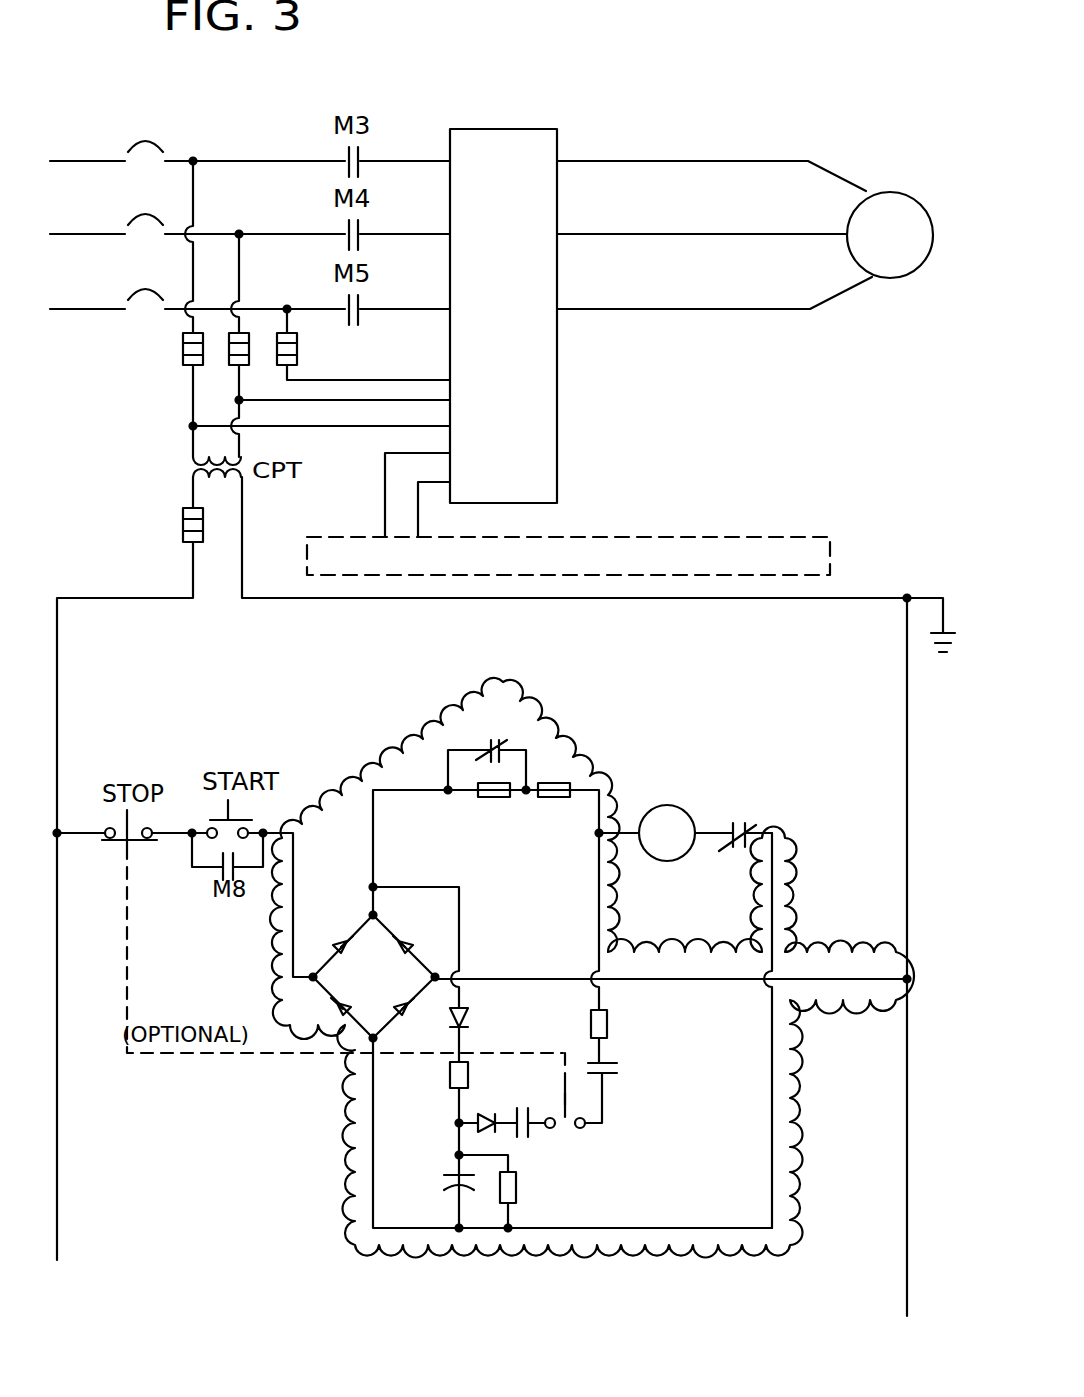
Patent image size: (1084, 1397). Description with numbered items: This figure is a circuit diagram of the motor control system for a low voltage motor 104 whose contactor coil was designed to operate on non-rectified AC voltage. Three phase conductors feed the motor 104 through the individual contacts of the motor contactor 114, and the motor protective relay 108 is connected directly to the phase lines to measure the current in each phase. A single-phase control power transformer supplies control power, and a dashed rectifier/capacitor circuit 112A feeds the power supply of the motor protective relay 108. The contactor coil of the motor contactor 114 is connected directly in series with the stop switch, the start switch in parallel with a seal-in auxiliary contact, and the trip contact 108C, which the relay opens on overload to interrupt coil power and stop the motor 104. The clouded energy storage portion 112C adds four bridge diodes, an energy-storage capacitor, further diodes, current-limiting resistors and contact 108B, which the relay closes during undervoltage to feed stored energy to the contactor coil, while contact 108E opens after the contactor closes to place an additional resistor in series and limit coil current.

The motor 104 is at (895, 192).
The motor protective relay 108 is at (503, 316).
The rectifier/capacitor circuit 112A is at (660, 537).
The energy storage circuit portion 112C is at (590, 730).
The motor contactor 114 is at (662, 805).
The contact of the motor protective relay 108B is at (542, 1091).
The trip contact of the overload relay 108C is at (744, 809).
The motor protective relay contact 108E is at (487, 741).